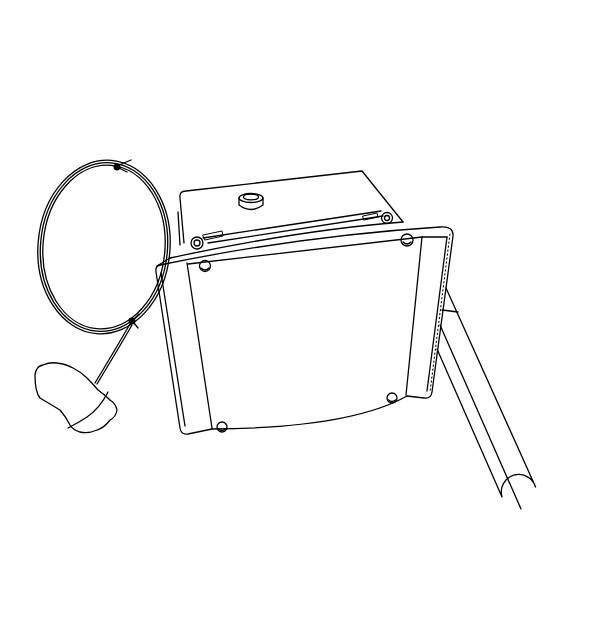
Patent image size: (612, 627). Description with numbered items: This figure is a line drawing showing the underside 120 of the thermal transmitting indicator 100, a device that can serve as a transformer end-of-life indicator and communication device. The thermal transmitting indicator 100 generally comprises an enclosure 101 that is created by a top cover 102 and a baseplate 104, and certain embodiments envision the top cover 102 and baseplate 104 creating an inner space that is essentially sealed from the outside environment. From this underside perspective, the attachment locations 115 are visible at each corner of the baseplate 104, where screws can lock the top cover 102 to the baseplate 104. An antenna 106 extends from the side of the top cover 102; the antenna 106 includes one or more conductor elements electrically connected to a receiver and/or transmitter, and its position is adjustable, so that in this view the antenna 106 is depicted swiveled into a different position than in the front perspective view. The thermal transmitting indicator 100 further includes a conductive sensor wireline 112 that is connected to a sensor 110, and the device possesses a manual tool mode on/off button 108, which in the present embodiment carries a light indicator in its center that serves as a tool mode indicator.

The thermal transmitting indicator 100 is at (293, 38).
The enclosure 101 is at (347, 257).
The top cover 102 is at (285, 193).
The baseplate 104 is at (238, 423).
The antenna 106 is at (493, 405).
The manual tool mode on/off button 108 is at (252, 188).
The sensor 110 is at (83, 400).
The conductive sensor wireline 112 is at (157, 208).
The attachment locations 115 is at (222, 433).
The underside 120 is at (278, 372).